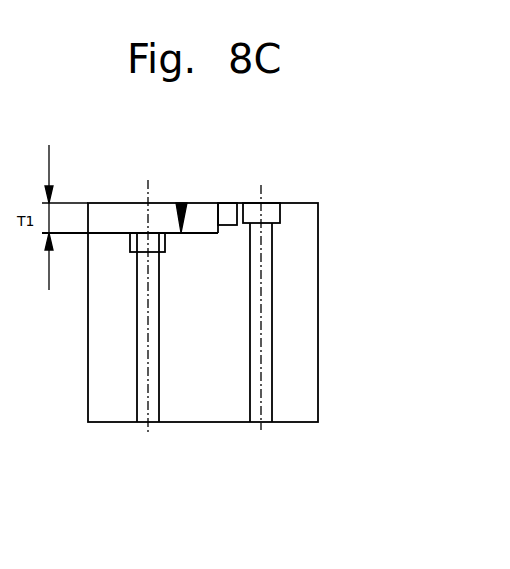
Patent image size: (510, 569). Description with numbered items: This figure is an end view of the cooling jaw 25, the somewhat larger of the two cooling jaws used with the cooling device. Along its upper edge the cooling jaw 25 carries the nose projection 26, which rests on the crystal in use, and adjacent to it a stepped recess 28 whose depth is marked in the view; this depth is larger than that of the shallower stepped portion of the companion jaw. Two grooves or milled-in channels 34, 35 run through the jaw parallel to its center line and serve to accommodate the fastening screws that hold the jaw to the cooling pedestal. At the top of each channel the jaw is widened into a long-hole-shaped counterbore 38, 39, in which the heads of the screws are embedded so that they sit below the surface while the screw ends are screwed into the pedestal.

The cooling jaw 25 is at (322, 330).
The nose projection 26 is at (228, 216).
The stepped recess 28 is at (182, 204).
The groove 34 is at (146, 410).
The groove 35 is at (262, 410).
The long-hole-shaped counterbore 38 is at (141, 243).
The long-hole-shaped counterbore 39 is at (273, 210).